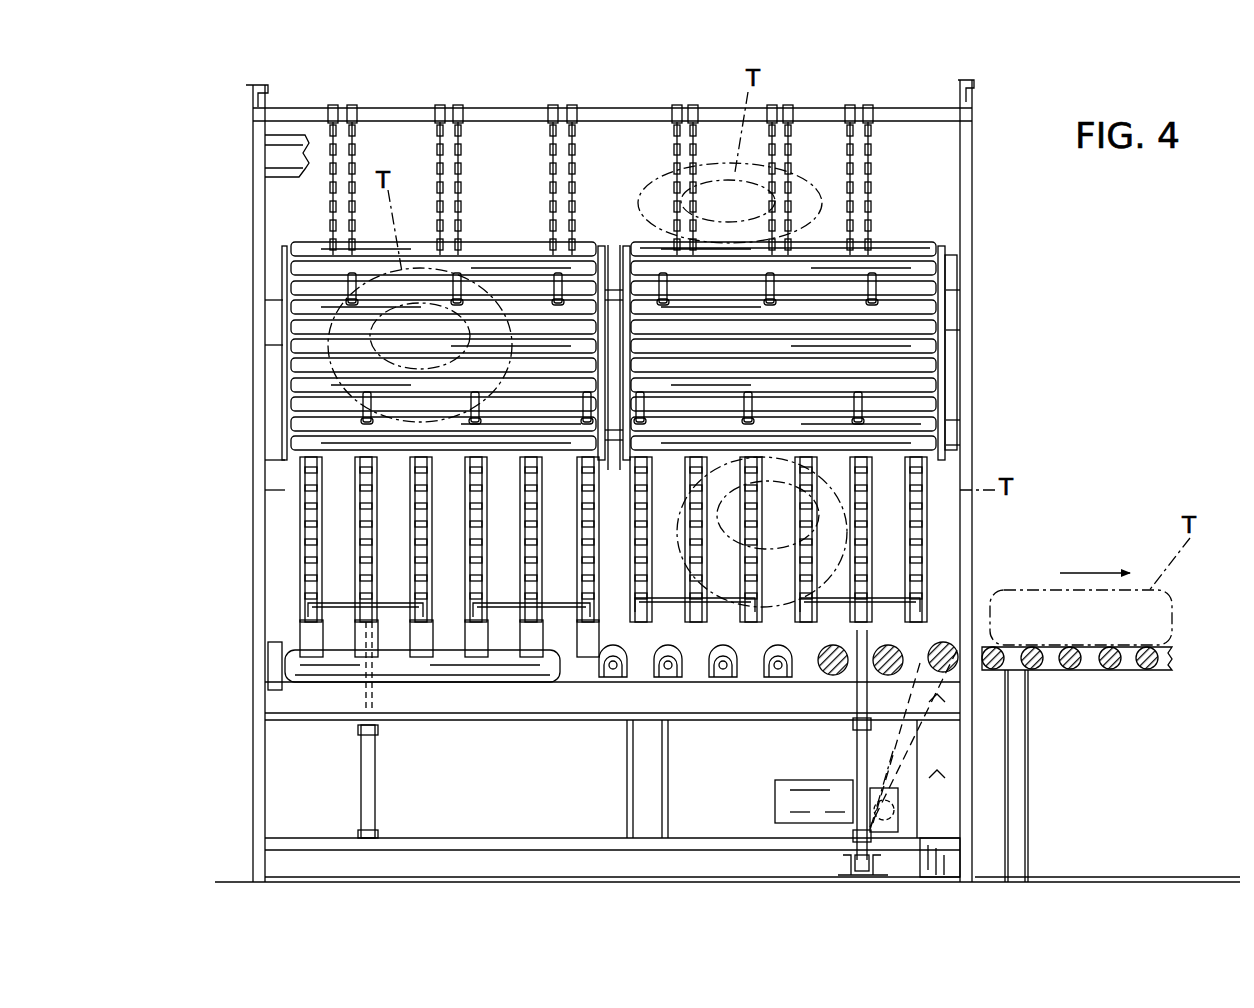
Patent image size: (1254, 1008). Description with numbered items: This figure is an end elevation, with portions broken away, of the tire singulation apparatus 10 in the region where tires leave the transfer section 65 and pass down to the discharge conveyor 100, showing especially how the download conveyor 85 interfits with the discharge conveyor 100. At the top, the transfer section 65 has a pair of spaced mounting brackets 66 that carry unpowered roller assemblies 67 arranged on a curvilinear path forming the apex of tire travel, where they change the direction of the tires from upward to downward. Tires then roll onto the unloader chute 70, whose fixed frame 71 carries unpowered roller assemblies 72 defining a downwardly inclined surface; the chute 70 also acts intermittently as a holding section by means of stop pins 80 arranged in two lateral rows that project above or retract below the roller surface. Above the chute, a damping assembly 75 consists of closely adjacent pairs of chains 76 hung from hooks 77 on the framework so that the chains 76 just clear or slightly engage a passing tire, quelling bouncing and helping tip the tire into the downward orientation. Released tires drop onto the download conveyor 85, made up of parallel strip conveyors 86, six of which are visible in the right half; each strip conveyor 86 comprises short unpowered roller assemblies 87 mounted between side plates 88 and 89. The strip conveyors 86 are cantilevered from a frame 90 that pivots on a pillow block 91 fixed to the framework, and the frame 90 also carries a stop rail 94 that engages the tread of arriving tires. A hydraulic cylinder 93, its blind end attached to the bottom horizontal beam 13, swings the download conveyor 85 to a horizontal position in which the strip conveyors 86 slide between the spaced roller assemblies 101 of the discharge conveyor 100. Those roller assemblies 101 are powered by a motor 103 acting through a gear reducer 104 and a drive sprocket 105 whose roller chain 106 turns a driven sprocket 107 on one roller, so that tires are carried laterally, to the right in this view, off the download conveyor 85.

The tire singulation apparatus 10 is at (175, 112).
The bottom horizontal beam 13 is at (975, 850).
The transfer section 65 is at (382, 300).
The mounting brackets 66 is at (606, 246).
The roller assemblies 67 is at (870, 257).
The unloader chute 70 is at (278, 393).
The fixed frame 71 is at (283, 364).
The roller assemblies 72 is at (922, 347).
The damping assembly 75 is at (575, 162).
The chains 76 is at (353, 172).
The hooks 77 is at (850, 121).
The stop pins 80 is at (360, 408).
The download conveyor 85 is at (618, 577).
The strip conveyors 86 is at (355, 580).
The roller assemblies 87 is at (298, 505).
The side plate 88 is at (928, 545).
The side plate 89 is at (930, 537).
The frame 90 is at (460, 672).
The pillow block 91 is at (276, 668).
The hydraulic cylinder 93 is at (855, 756).
The stop rail 94 is at (398, 650).
The discharge conveyor 100 is at (912, 640).
The roller assemblies 101 is at (840, 672).
The motor 103 is at (786, 797).
The gear reducer 104 is at (900, 792).
The drive sprocket 105 is at (898, 810).
The roller chain 106 is at (893, 751).
The driven sprocket 107 is at (960, 640).